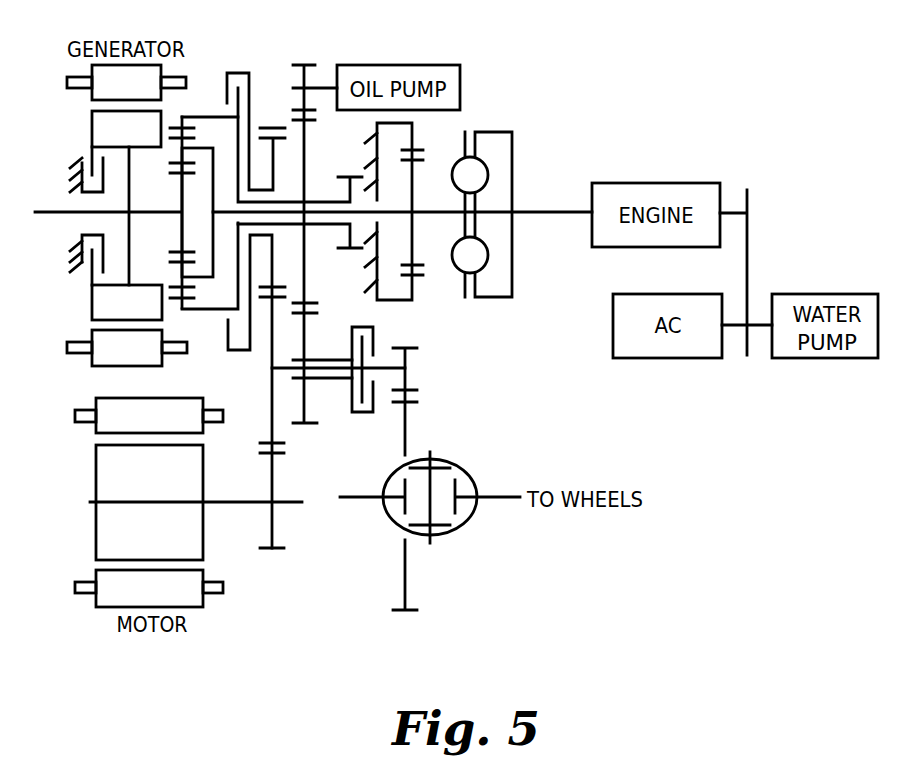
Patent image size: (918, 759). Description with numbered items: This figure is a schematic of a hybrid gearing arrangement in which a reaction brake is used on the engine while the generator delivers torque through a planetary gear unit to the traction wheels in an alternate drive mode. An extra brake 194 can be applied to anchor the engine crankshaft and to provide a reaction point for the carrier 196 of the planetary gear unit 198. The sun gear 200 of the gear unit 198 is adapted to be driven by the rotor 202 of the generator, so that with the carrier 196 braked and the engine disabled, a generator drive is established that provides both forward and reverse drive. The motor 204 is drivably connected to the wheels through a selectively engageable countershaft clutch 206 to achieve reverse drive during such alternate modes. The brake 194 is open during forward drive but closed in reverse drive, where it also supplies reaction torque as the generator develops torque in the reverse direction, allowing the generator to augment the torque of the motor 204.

The brake 194 is at (412, 135).
The carrier 196 is at (200, 147).
The planetary gear unit 198 is at (196, 311).
The sun gear 200 is at (180, 195).
The rotor 202 is at (110, 302).
The motor 204 is at (122, 543).
The countershaft clutch 206 is at (377, 405).